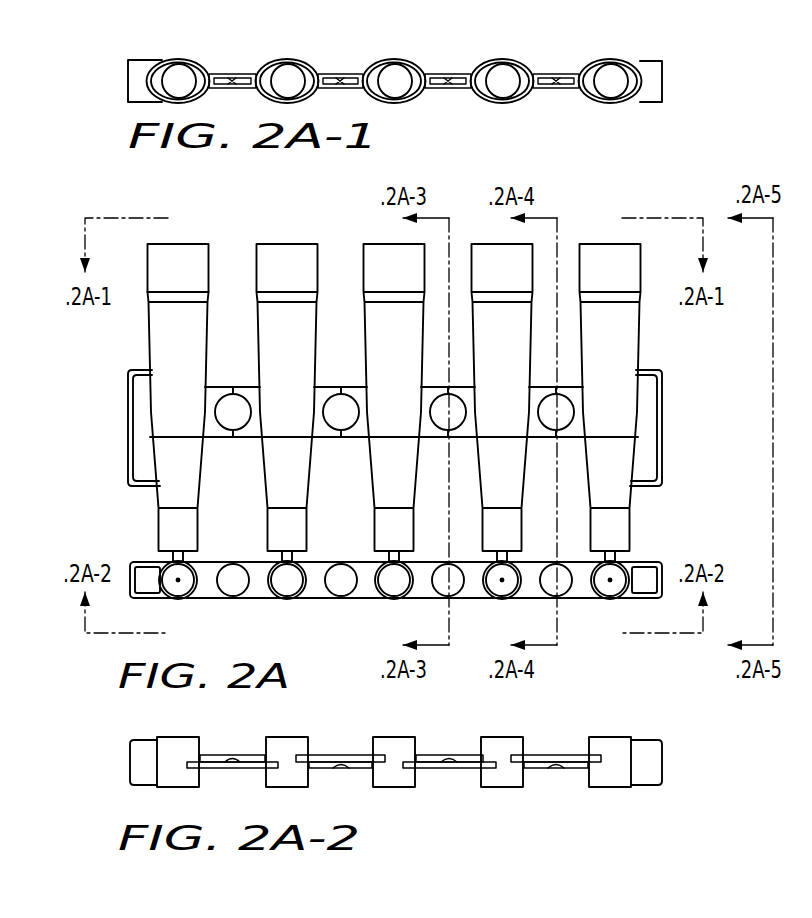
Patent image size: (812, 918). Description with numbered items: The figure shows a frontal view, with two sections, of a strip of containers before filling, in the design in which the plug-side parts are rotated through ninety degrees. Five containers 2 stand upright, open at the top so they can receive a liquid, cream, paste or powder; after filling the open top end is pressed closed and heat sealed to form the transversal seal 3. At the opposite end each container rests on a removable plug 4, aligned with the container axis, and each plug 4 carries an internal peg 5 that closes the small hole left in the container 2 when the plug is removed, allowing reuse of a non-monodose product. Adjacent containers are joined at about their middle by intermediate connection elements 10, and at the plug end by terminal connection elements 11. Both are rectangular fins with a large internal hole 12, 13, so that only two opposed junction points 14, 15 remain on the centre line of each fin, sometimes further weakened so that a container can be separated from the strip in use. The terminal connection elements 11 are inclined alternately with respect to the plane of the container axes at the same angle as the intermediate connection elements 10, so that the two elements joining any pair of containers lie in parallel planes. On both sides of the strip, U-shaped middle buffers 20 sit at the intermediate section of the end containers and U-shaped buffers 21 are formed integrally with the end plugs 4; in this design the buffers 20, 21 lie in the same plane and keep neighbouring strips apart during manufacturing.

In FIG. 2A, the container 2 is at (630, 337).
In FIG. 2A, the transversal seal 3 is at (200, 266).
In FIG. 2A, the removable plug 4 is at (524, 562).
In FIG. 2A-2, the removable plug 4 is at (487, 782).
In FIG. 2A, the internal peg 5 is at (394, 580).
In FIG. 2A, the intermediate connection element 10 is at (213, 390).
In FIG. 2A, the terminal connection element 11 is at (427, 560).
In FIG. 2A-2, the terminal connection element 11 is at (580, 772).
In FIG. 2A, the internal hole 12 is at (442, 418).
In FIG. 2A, the internal hole 13 is at (462, 563).
In FIG. 2A, the junction point 14 is at (559, 393).
In FIG. 2A, the junction point 15 is at (560, 565).
In FIG. 2A, the middle buffer 20 is at (128, 410).
In FIG. 2A, the buffer 21 is at (132, 563).
In FIG. 2A-2, the buffer 21 is at (653, 778).